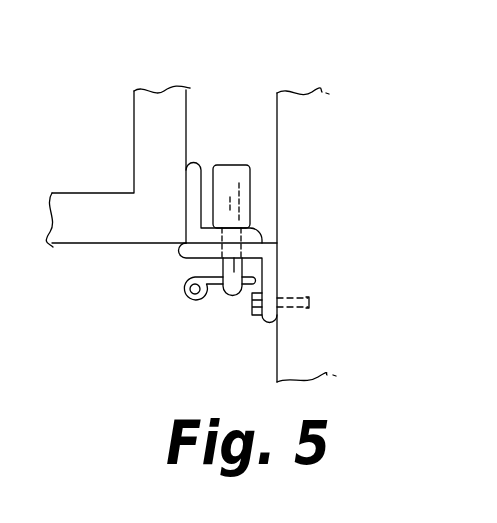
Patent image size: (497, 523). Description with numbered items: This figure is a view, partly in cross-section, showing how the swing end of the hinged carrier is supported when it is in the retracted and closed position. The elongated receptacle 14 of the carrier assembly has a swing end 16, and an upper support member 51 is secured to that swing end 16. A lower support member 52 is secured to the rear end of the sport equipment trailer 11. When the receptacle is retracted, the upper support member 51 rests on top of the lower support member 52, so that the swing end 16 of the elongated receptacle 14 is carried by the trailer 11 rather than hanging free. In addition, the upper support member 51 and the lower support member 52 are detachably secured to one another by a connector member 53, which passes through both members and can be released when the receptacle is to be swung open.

The sport equipment trailer 11 is at (365, 90).
The elongated receptacle 14 is at (115, 163).
The swing end 16 is at (112, 218).
The upper support member 51 is at (193, 163).
The lower support member 52 is at (272, 252).
The connector member 53 is at (243, 180).